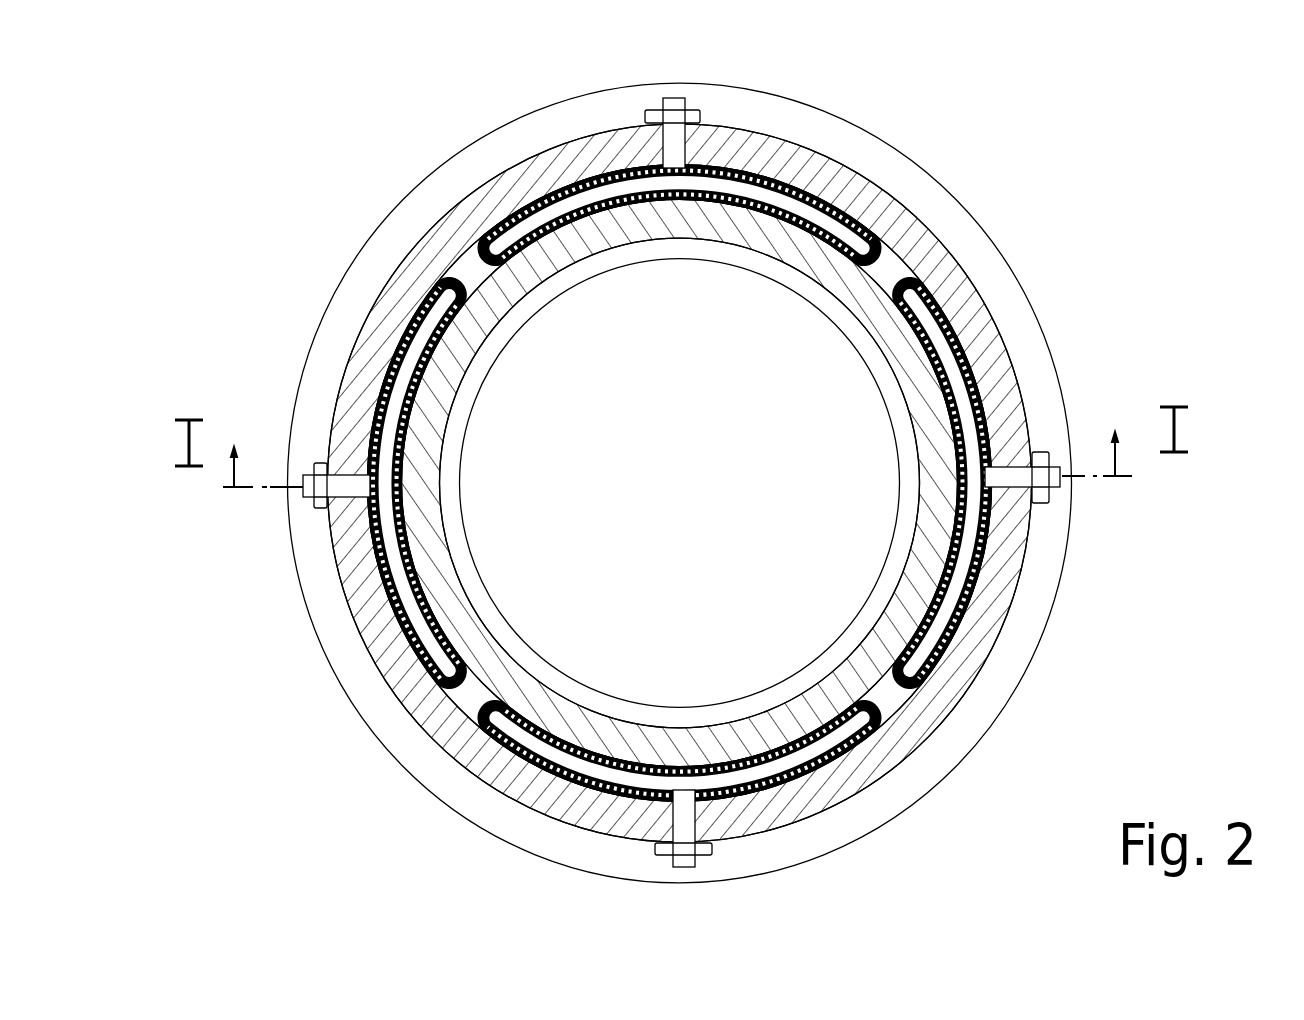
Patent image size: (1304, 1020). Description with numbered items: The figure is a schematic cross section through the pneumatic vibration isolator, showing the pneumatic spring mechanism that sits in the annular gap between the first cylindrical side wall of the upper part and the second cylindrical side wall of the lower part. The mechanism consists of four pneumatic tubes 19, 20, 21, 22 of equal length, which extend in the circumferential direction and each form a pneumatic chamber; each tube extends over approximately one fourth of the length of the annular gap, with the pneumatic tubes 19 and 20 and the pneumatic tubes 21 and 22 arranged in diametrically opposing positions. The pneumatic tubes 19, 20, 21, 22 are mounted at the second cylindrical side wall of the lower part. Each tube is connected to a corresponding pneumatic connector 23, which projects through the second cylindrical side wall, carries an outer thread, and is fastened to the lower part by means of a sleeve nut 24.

The pneumatic tube 19 is at (790, 192).
The pneumatic tube 20 is at (563, 770).
The pneumatic tube 21 is at (973, 557).
The pneumatic tube 22 is at (377, 568).
The pneumatic connector 23 is at (667, 93).
The sleeve nut 24 is at (643, 113).